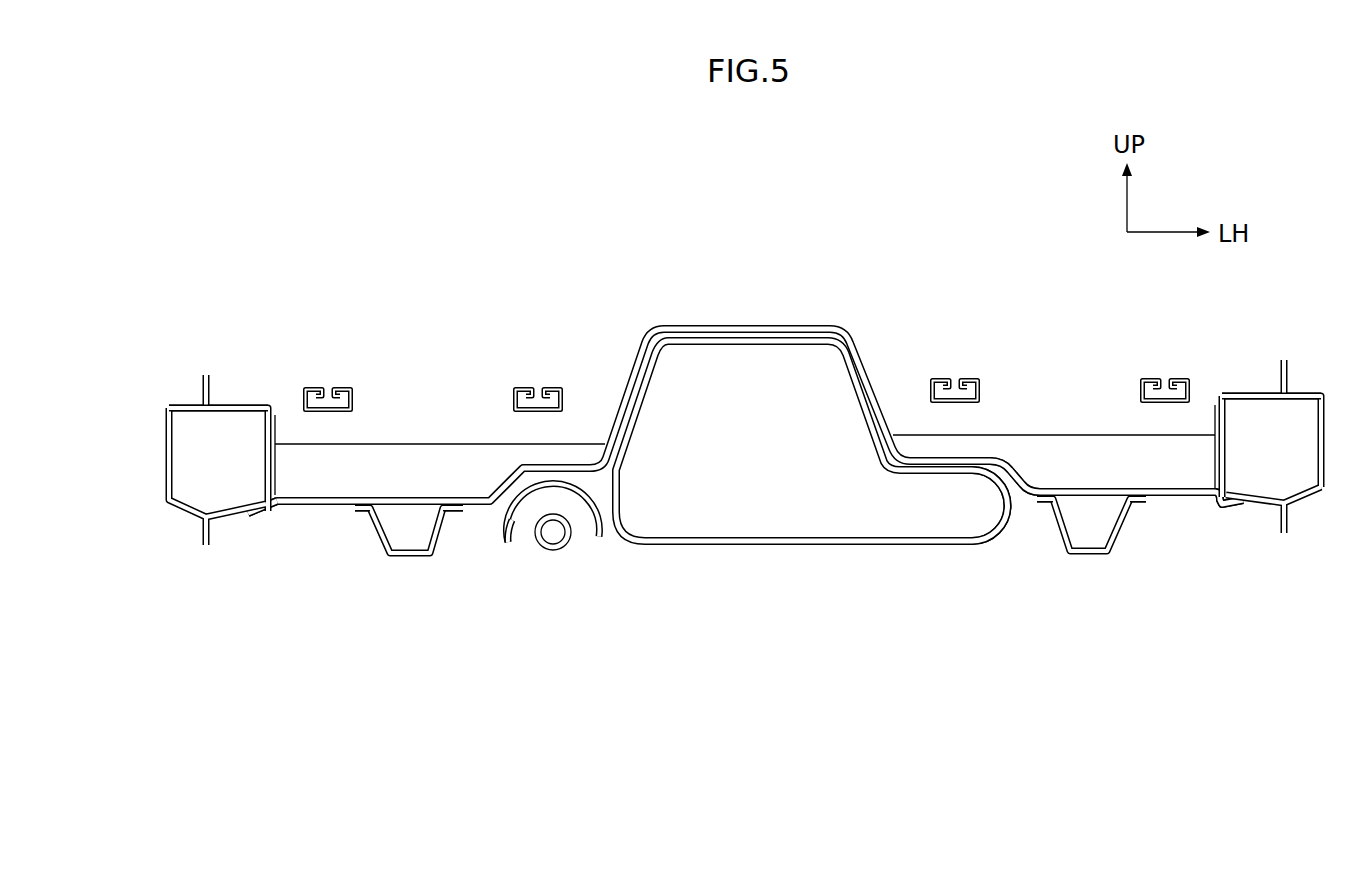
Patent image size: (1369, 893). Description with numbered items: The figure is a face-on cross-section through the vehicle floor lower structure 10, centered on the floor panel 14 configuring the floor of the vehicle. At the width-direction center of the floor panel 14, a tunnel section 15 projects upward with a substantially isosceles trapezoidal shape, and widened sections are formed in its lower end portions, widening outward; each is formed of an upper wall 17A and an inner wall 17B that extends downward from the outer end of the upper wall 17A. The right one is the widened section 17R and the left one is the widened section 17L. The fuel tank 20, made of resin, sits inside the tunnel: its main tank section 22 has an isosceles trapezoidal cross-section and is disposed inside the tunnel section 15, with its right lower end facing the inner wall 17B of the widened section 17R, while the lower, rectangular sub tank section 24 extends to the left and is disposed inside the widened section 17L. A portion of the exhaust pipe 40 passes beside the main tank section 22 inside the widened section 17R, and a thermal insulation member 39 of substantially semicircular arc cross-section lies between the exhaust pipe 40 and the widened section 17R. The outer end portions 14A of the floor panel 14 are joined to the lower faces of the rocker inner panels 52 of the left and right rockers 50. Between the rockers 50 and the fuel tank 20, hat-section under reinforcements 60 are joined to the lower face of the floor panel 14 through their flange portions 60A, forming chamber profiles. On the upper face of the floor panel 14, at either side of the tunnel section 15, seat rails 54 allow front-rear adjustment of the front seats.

The vehicle floor lower structure 10 is at (768, 470).
The floor panel 14 is at (601, 387).
The vehicle width direction outer side end portion 14A is at (268, 520).
The tunnel section 15 is at (776, 322).
The upper wall 17A is at (976, 478).
The inner wall 17B is at (1008, 486).
The left side widened section 17L is at (990, 541).
The right side widened section 17R is at (523, 503).
The fuel tank 20 is at (705, 549).
The main tank section 22 is at (740, 350).
The sub tank section 24 is at (901, 541).
The thermal insulation member 39 is at (503, 546).
The exhaust pipe 40 is at (555, 552).
The rocker 50 is at (181, 401).
The rocker inner panel 52 is at (234, 405).
The seat rail 54 is at (518, 386).
The under reinforcement 60 is at (409, 574).
The flange portion 60A is at (367, 513).